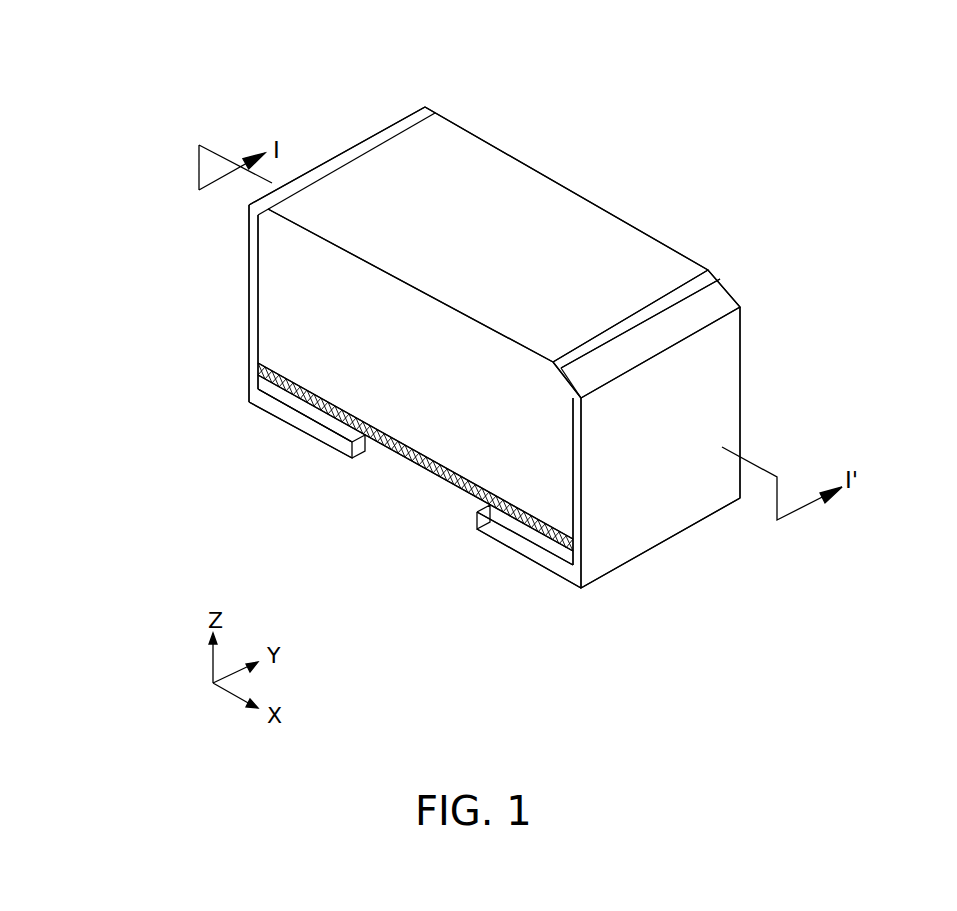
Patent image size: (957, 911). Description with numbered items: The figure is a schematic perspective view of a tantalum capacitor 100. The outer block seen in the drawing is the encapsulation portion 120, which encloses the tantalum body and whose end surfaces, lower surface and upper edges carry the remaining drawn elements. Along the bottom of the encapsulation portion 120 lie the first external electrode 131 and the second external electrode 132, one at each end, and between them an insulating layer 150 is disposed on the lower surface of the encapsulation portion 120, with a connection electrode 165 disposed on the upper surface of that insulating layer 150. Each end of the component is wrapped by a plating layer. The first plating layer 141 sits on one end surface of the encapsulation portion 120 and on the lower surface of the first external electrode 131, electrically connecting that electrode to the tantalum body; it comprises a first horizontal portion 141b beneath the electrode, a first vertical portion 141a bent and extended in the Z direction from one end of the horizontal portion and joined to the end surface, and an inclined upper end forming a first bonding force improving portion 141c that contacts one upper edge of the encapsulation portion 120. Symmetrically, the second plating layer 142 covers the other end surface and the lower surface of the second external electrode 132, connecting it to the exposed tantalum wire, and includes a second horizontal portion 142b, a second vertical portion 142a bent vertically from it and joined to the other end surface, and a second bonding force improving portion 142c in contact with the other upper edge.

The tantalum capacitor 100 is at (538, 44).
The encapsulation portion 120 is at (567, 217).
The first external electrode 131 is at (312, 432).
The second external electrode 132 is at (497, 545).
The first plating layer 141 is at (118, 213).
The first vertical portion 141a is at (249, 300).
The first horizontal portion 141b is at (285, 416).
The first bonding force improving portion 141c is at (253, 210).
The second plating layer 142 is at (742, 556).
The second vertical portion 142a is at (583, 500).
The second horizontal portion 142b is at (545, 552).
The second bonding force improving portion 142c is at (578, 376).
The insulating layer 150 is at (453, 497).
The connection electrode 165 is at (397, 462).